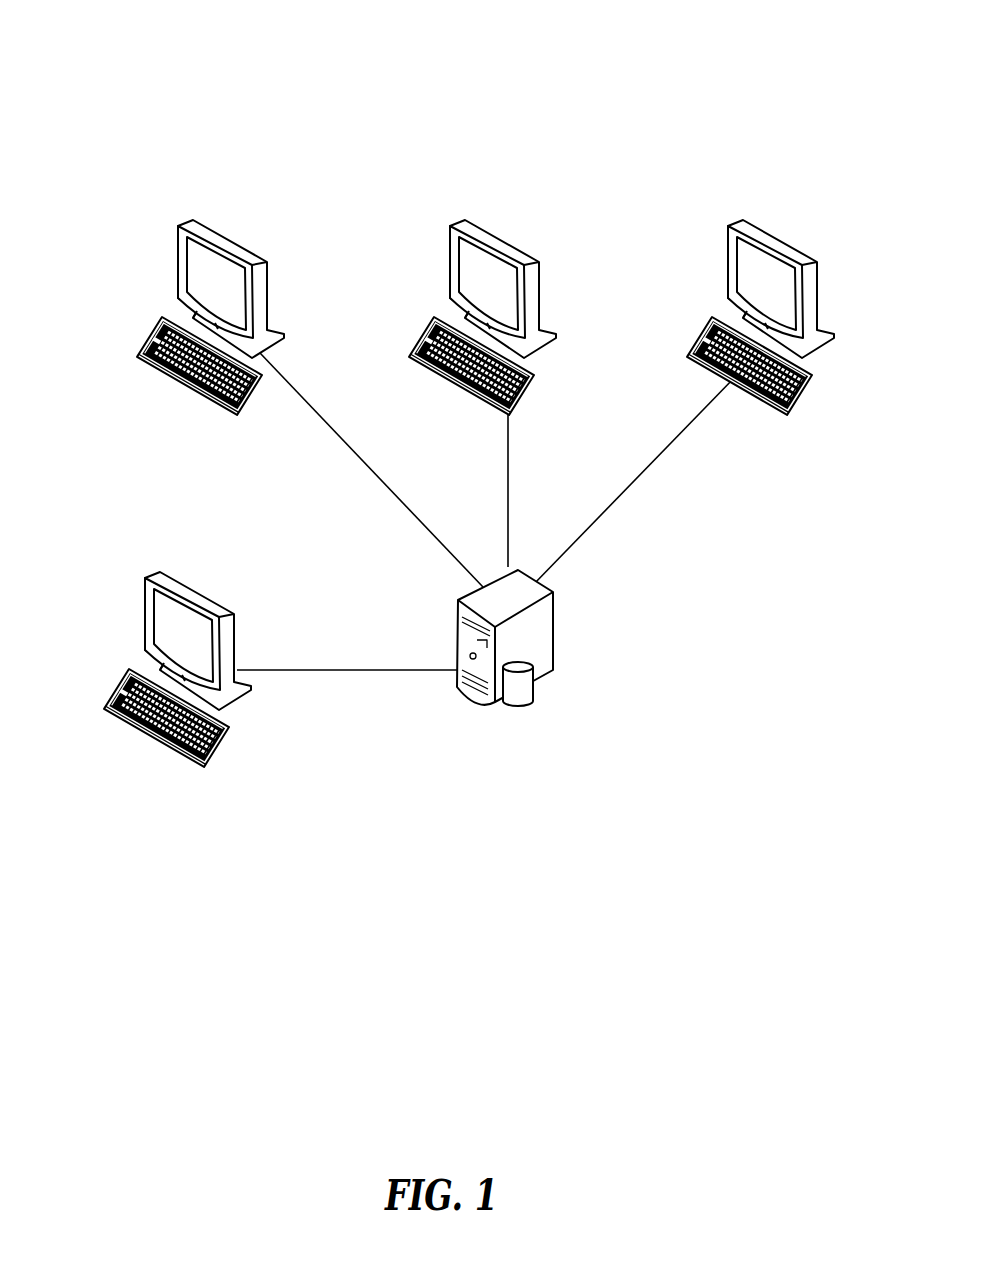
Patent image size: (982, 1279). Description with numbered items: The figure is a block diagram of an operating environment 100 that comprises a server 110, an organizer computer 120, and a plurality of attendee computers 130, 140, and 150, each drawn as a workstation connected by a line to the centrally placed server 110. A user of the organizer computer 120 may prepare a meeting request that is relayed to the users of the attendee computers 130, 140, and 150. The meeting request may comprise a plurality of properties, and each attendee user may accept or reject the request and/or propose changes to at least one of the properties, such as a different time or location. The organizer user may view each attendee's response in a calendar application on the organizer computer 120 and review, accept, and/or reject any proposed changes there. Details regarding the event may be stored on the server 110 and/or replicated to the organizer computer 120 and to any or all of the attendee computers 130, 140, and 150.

The operating environment 100 is at (461, 33).
The server 110 is at (475, 605).
The organizer computer 120 is at (146, 661).
The attendee computer 130 is at (193, 222).
The attendee computer 140 is at (451, 309).
The attendee computer 150 is at (729, 309).